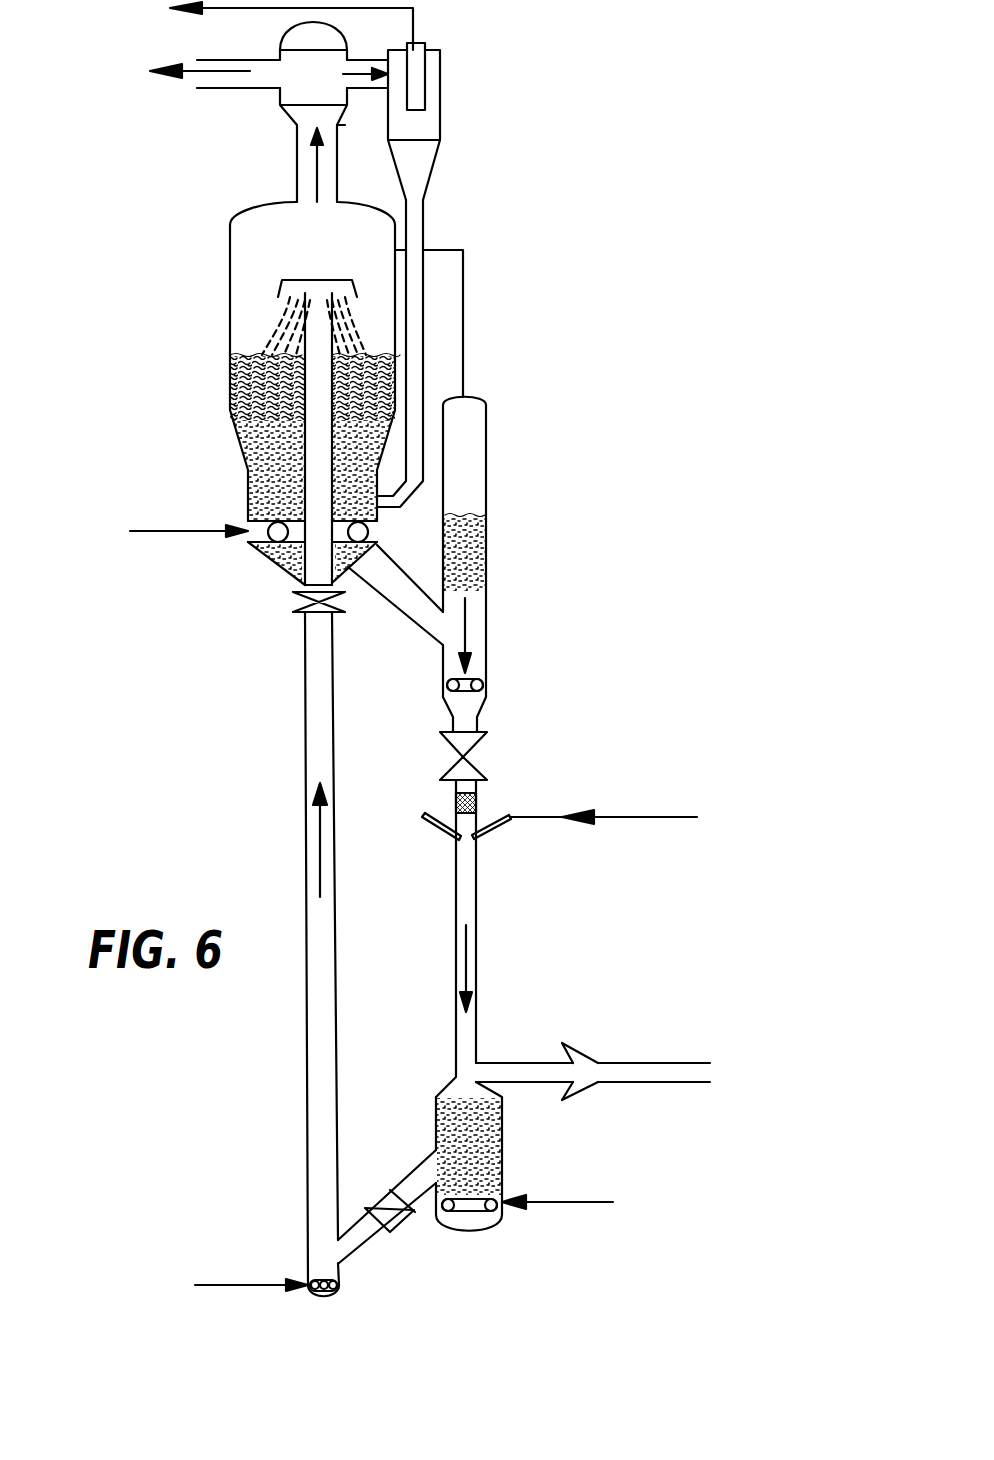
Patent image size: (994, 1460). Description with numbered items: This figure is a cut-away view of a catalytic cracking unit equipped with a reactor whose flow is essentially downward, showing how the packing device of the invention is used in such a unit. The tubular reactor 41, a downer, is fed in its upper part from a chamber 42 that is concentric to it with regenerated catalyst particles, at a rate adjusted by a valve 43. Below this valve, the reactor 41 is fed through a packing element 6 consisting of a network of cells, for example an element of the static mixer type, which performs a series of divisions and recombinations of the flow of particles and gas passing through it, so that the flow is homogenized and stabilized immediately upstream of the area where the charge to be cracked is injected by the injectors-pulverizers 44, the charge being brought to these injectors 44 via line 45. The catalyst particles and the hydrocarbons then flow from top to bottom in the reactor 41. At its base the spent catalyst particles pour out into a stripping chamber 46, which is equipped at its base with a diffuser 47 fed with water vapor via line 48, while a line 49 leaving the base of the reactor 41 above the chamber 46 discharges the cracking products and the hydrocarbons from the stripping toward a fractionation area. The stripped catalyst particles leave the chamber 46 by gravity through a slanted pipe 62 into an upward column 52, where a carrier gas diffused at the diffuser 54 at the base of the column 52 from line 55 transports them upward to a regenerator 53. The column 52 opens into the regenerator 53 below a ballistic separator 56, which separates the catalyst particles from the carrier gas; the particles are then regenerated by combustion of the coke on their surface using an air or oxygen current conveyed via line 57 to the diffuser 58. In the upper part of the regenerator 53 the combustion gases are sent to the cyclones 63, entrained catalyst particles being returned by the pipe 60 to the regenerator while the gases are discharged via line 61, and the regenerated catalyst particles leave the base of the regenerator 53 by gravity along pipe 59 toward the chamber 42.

The packing element 6 is at (478, 803).
The tubular reactor 41 is at (478, 970).
The chamber 42 is at (500, 497).
The valve 43 is at (478, 754).
The injectors 44 is at (493, 829).
The line 45 is at (657, 813).
The stripping chamber 46 is at (436, 1118).
The diffuser 47 is at (478, 1206).
The line 48 is at (562, 1200).
The line 49 is at (668, 1063).
The upward column 52 is at (300, 1074).
The regenerator 53 is at (236, 450).
The diffuser 54 is at (341, 1283).
The line 55 is at (230, 1283).
The ballistic separator 56 is at (312, 272).
The line 57 is at (163, 533).
The diffuser 58 is at (276, 540).
The pipe 59 is at (400, 598).
The pipe 60 is at (413, 318).
The line 61 is at (413, 18).
The slanted pipe 62 is at (372, 1226).
The cyclones 63 is at (447, 172).